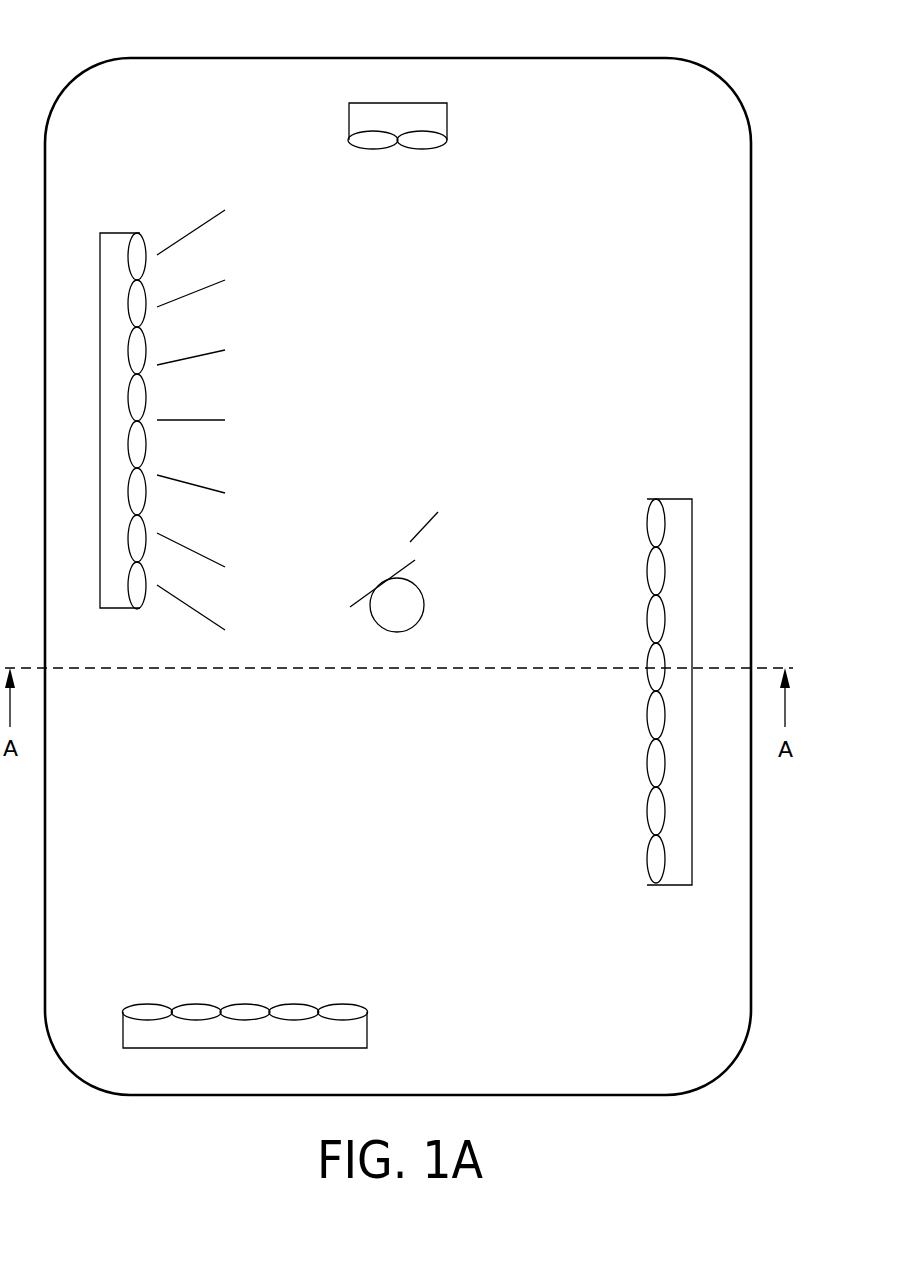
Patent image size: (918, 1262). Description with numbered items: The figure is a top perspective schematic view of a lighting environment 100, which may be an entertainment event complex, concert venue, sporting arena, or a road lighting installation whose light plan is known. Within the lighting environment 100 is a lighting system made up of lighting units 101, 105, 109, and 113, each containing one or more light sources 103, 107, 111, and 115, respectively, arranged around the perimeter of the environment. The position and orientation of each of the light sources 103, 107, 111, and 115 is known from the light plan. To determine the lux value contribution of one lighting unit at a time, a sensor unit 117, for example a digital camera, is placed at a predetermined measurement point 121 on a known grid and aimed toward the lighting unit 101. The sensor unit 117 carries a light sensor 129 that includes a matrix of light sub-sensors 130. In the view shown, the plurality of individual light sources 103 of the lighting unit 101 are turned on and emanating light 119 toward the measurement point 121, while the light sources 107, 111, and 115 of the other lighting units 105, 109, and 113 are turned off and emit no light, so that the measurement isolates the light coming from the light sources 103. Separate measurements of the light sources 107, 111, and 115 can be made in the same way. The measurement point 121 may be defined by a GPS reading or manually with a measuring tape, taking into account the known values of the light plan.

The lighting environment 100 is at (724, 67).
The lighting unit 101 is at (158, 393).
The light sources 103 is at (137, 446).
The lighting unit 105 is at (433, 158).
The light sources 107 is at (372, 142).
The lighting unit 109 is at (630, 664).
The light sources 111 is at (652, 767).
The lighting unit 113 is at (282, 998).
The light sources 115 is at (199, 1011).
The sensor unit 117 is at (413, 604).
The light 119 is at (223, 280).
The measurement point 121 is at (388, 573).
The light sensor 129 is at (410, 542).
The light sub-sensors 130 is at (424, 527).